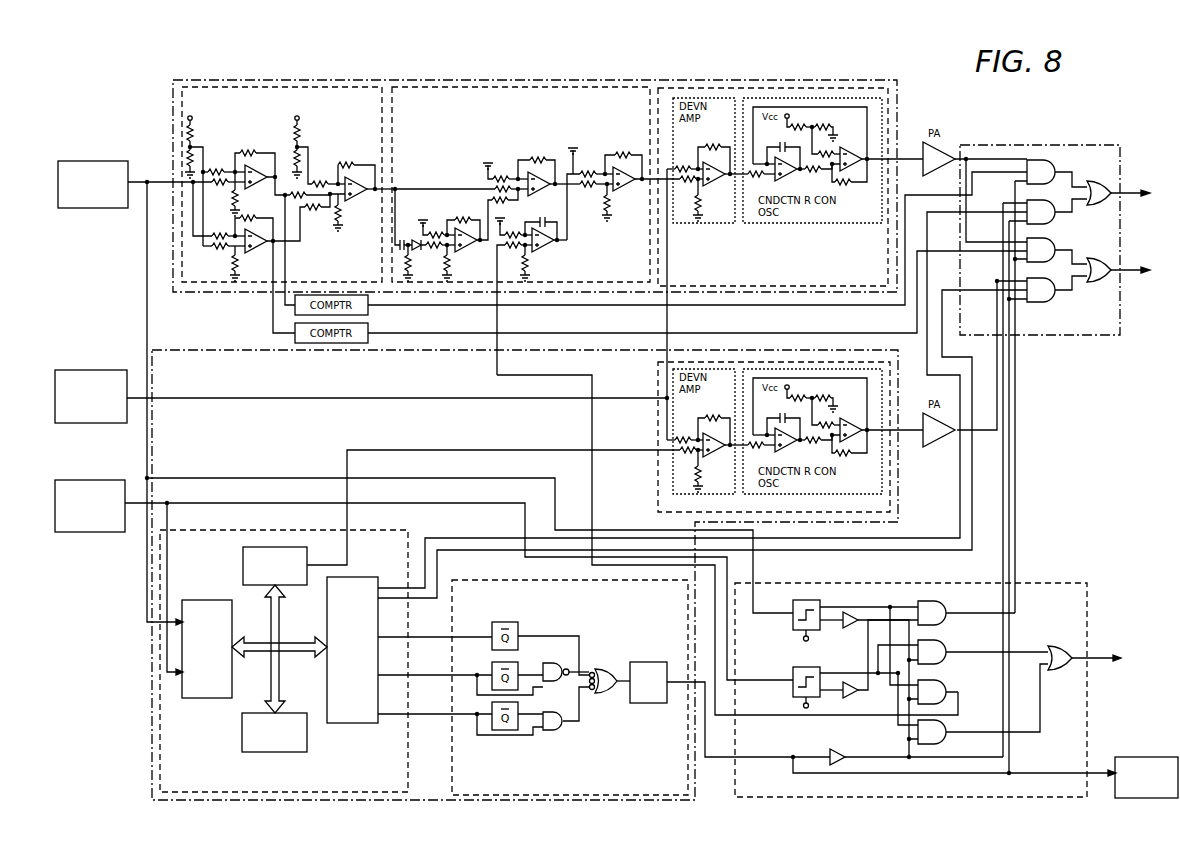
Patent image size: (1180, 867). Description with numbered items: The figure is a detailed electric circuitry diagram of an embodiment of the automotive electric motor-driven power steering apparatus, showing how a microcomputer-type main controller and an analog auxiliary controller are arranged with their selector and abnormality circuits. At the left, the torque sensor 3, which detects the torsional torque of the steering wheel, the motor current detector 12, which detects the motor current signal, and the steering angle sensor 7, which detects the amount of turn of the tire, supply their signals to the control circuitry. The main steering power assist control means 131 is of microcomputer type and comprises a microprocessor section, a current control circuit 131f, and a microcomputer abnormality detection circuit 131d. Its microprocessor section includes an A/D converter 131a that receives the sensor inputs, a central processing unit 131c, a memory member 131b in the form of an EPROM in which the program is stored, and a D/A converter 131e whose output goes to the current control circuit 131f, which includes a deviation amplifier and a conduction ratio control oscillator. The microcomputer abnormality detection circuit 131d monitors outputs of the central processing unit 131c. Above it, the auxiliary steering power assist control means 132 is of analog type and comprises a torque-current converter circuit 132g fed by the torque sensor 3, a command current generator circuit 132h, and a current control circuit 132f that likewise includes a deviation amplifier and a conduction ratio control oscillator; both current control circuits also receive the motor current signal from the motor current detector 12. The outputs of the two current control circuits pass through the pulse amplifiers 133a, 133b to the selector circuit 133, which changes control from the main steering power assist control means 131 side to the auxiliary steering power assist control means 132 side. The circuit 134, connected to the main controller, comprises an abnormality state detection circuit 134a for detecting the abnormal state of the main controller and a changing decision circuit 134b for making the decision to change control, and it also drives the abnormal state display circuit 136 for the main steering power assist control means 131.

The torque sensor 3 is at (90, 160).
The steering angle sensor 7 is at (92, 534).
The motor current detector 12 is at (83, 369).
The main steering power assist control means 131 is at (152, 760).
The A/D converter 131a is at (193, 699).
The memory (EPROM) member 131b is at (307, 735).
The central processing unit (CPU) 131c is at (365, 577).
The microcomputer abnormality detection circuit 131d is at (506, 579).
The D/A converter 131e is at (243, 555).
The current control circuit 131f is at (658, 492).
The auxiliary steering power assist control means 132 is at (173, 101).
The current control circuit 132f is at (836, 88).
The torque-current converter circuit 132g is at (363, 87).
The command current generator circuit 132h is at (621, 87).
The selector circuit 133 is at (1090, 336).
The pulse amplifier 133a is at (948, 148).
The pulse amplifier 133b is at (932, 451).
The abnormality state detection and changing decision circuit 134 is at (957, 668).
The abnormality state detection circuit 134a is at (853, 678).
The changing decision circuit 134b is at (849, 682).
The abnormal state display circuit 136 is at (1140, 757).